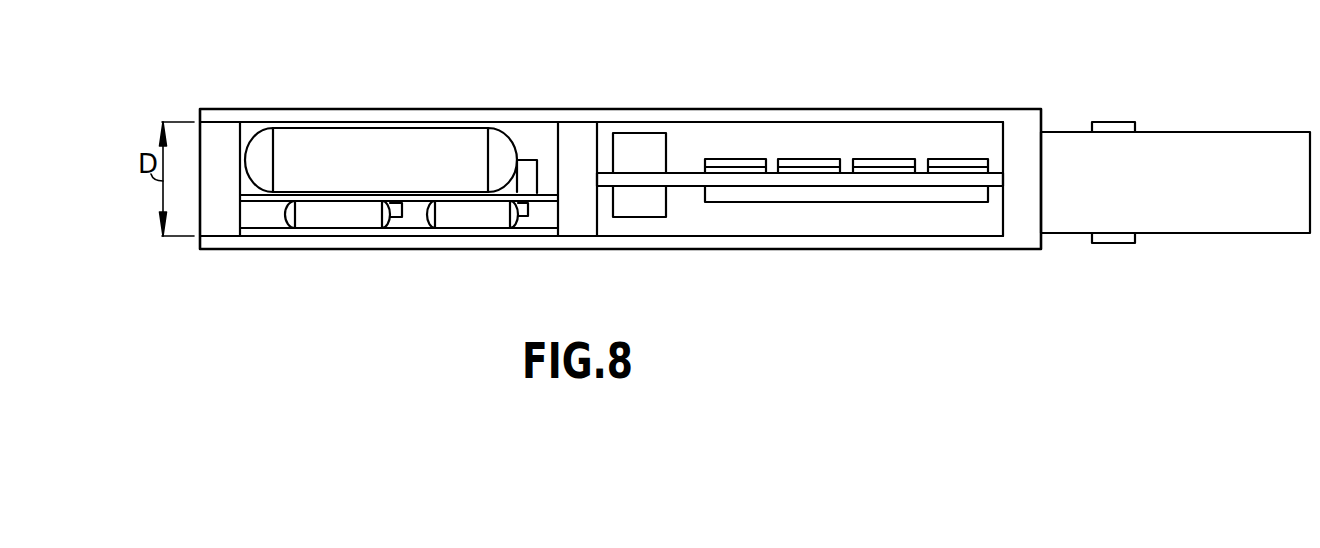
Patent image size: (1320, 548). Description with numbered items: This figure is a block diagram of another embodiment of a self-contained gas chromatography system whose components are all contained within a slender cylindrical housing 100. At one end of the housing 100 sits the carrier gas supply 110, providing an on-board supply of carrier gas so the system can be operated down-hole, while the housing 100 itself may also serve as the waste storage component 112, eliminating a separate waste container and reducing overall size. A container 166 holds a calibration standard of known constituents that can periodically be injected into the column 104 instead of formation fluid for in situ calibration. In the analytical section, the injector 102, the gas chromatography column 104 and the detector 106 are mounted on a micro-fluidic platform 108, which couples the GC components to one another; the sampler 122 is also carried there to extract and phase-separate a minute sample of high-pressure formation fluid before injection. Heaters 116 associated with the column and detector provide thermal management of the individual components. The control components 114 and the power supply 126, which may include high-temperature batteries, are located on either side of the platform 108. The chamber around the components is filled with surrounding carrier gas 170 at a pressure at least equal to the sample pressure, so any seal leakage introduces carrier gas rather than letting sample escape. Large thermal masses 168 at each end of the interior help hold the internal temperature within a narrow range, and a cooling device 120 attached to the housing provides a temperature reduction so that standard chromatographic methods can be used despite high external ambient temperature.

The housing 100 is at (473, 107).
The injector 102 is at (812, 158).
The gas chromatography column 104 is at (880, 158).
The detector 106 is at (942, 158).
The micro-fluidic platform 108 is at (678, 188).
The carrier gas supply 110 is at (348, 216).
The waste storage component 112 is at (390, 138).
The control components 114 is at (630, 148).
The heater 116 is at (802, 175).
The cooling device 120 is at (1187, 147).
The sampler 122 is at (730, 158).
The power supply 126 is at (645, 210).
The calibration standard container 166 is at (445, 220).
The thermal masses 168 is at (217, 218).
The surrounding carrier gas 170 is at (728, 222).